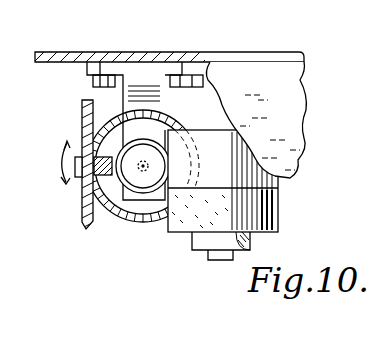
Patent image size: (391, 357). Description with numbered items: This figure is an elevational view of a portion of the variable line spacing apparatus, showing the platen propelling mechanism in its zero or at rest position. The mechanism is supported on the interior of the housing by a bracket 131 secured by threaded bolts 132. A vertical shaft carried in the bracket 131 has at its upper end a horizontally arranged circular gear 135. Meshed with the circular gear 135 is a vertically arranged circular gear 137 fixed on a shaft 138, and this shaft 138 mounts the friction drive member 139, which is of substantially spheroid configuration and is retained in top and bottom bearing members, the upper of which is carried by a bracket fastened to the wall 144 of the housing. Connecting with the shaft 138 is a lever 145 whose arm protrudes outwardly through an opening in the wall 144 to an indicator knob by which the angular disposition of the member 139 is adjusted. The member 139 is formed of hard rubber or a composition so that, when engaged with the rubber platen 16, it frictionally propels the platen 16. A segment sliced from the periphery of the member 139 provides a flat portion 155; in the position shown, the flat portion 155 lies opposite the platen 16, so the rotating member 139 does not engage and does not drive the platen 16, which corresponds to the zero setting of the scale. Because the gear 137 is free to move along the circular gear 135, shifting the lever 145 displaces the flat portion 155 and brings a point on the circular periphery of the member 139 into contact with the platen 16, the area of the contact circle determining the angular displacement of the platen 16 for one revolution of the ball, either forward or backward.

The bracket 131 is at (100, 62).
The threaded bolts 132 is at (186, 62).
The circular gear 135 is at (145, 224).
The circular gear 137 is at (82, 107).
The shaft 138 is at (76, 199).
The friction drive member 139 is at (140, 189).
The wall 144 is at (297, 92).
The lever 145 is at (81, 129).
The flat portion 155 is at (170, 167).
The platen 16 is at (279, 210).